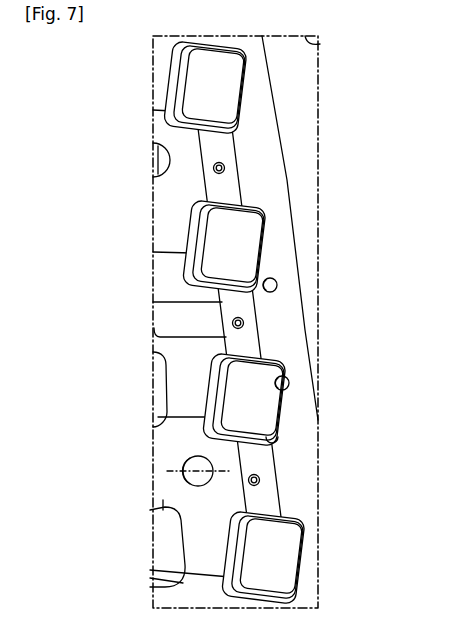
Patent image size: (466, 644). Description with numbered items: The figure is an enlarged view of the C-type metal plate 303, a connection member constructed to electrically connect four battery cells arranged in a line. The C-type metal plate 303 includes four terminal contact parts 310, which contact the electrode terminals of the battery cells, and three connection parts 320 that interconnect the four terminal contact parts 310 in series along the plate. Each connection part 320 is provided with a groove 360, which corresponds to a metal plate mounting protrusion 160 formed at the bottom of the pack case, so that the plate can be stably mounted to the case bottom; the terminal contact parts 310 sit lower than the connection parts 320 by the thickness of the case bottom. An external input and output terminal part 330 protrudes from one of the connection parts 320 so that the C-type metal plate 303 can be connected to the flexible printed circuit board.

The terminal contact part 310 is at (183, 85).
The connection part 320 is at (202, 167).
The external input and output terminal part 330 is at (193, 302).
The metal plate mounting protrusion 160 is at (210, 478).
The C-type metal plate 303 is at (272, 64).
The groove 360 is at (260, 480).